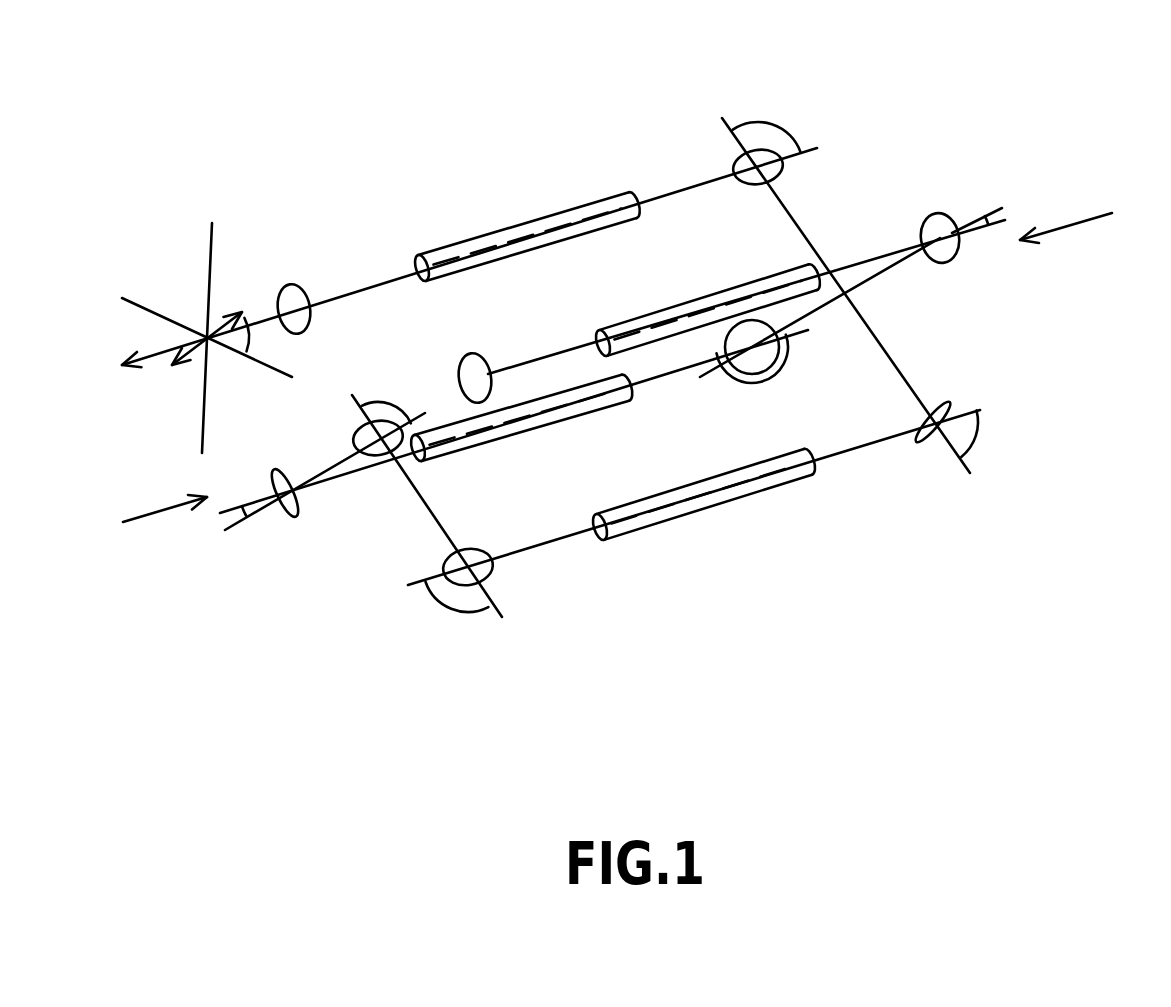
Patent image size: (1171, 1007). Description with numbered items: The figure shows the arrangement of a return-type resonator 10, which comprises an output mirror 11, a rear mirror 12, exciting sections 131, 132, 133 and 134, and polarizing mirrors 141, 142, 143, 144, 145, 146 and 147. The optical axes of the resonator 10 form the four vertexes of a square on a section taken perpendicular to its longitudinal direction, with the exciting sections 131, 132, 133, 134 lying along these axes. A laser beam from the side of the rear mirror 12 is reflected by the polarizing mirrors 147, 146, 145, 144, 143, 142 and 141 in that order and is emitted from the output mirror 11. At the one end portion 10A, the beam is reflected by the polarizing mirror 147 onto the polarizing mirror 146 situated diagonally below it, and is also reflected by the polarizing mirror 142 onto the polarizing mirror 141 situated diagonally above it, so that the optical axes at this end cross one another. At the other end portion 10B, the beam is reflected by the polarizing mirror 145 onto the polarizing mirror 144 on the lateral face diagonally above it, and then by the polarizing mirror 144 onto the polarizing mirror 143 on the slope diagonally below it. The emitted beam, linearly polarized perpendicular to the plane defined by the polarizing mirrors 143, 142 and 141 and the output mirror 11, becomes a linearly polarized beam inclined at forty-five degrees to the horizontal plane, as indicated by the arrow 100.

The return-type resonator 10 is at (960, 147).
The one end portion 10A is at (990, 315).
The other end portion 10B is at (371, 553).
The arrow 100 is at (188, 358).
The output mirror 11 is at (300, 286).
The rear mirror 12 is at (480, 357).
The exciting section 131 is at (467, 242).
The exciting section 132 is at (640, 313).
The exciting section 133 is at (612, 410).
The exciting section 134 is at (678, 513).
The polarizing mirror 141 is at (784, 168).
The polarizing mirror 142 is at (947, 402).
The polarizing mirror 143 is at (470, 543).
The polarizing mirror 144 is at (353, 437).
The polarizing mirror 145 is at (282, 518).
The polarizing mirror 146 is at (717, 340).
The polarizing mirror 147 is at (940, 263).